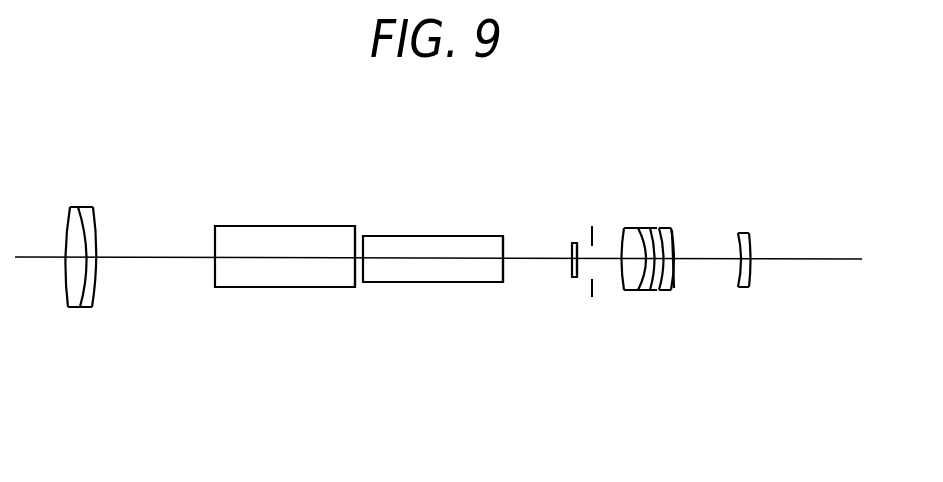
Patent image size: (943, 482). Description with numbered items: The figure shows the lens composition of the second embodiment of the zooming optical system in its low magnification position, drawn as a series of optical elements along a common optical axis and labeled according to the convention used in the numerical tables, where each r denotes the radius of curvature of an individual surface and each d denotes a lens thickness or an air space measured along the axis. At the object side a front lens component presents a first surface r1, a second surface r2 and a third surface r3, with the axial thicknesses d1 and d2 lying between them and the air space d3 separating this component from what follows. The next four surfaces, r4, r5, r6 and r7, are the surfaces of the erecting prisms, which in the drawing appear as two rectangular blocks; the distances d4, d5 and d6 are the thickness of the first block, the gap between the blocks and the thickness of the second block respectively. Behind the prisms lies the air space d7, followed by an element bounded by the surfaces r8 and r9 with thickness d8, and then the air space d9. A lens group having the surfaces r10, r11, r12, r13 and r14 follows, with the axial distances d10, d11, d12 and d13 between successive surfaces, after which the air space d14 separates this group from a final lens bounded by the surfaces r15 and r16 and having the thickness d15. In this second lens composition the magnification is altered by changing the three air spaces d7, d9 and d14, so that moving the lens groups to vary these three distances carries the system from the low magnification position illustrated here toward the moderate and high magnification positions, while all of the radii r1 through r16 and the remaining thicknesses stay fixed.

The first lens surface radius of curvature r1 is at (66, 207).
The second lens surface radius of curvature r2 is at (79, 207).
The third lens surface radius of curvature r3 is at (94, 205).
The fourth surface (erecting prism) r4 is at (214, 230).
The fifth surface (erecting prism) r5 is at (356, 230).
The sixth surface (erecting prism) r6 is at (363, 236).
The seventh surface (erecting prism) r7 is at (504, 236).
The eighth lens surface radius of curvature r8 is at (572, 243).
The ninth lens surface radius of curvature r9 is at (578, 243).
The tenth lens surface radius of curvature r10 is at (624, 228).
The eleventh lens surface radius of curvature r11 is at (639, 228).
The twelfth lens surface radius of curvature r12 is at (661, 228).
The thirteenth lens surface radius of curvature r13 is at (672, 228).
The fourteenth lens surface radius of curvature r14 is at (673, 226).
The fifteenth lens surface radius of curvature r15 is at (739, 233).
The sixteenth lens surface radius of curvature r16 is at (749, 233).
The first lens thickness d1 is at (77, 262).
The second lens thickness d2 is at (92, 290).
The third axial distance d3 is at (152, 262).
The fourth axial distance d4 is at (282, 262).
The fifth axial distance d5 is at (357, 262).
The sixth axial distance d6 is at (433, 262).
The seventh axial distance (variable) d7 is at (536, 262).
The eighth axial distance d8 is at (577, 278).
The ninth axial distance (variable) d9 is at (603, 263).
The tenth axial distance d10 is at (629, 263).
The eleventh axial distance d11 is at (652, 264).
The twelfth axial distance d12 is at (662, 290).
The thirteenth axial distance d13 is at (672, 290).
The fourteenth axial distance (variable) d14 is at (703, 265).
The fifteenth axial distance d15 is at (750, 290).